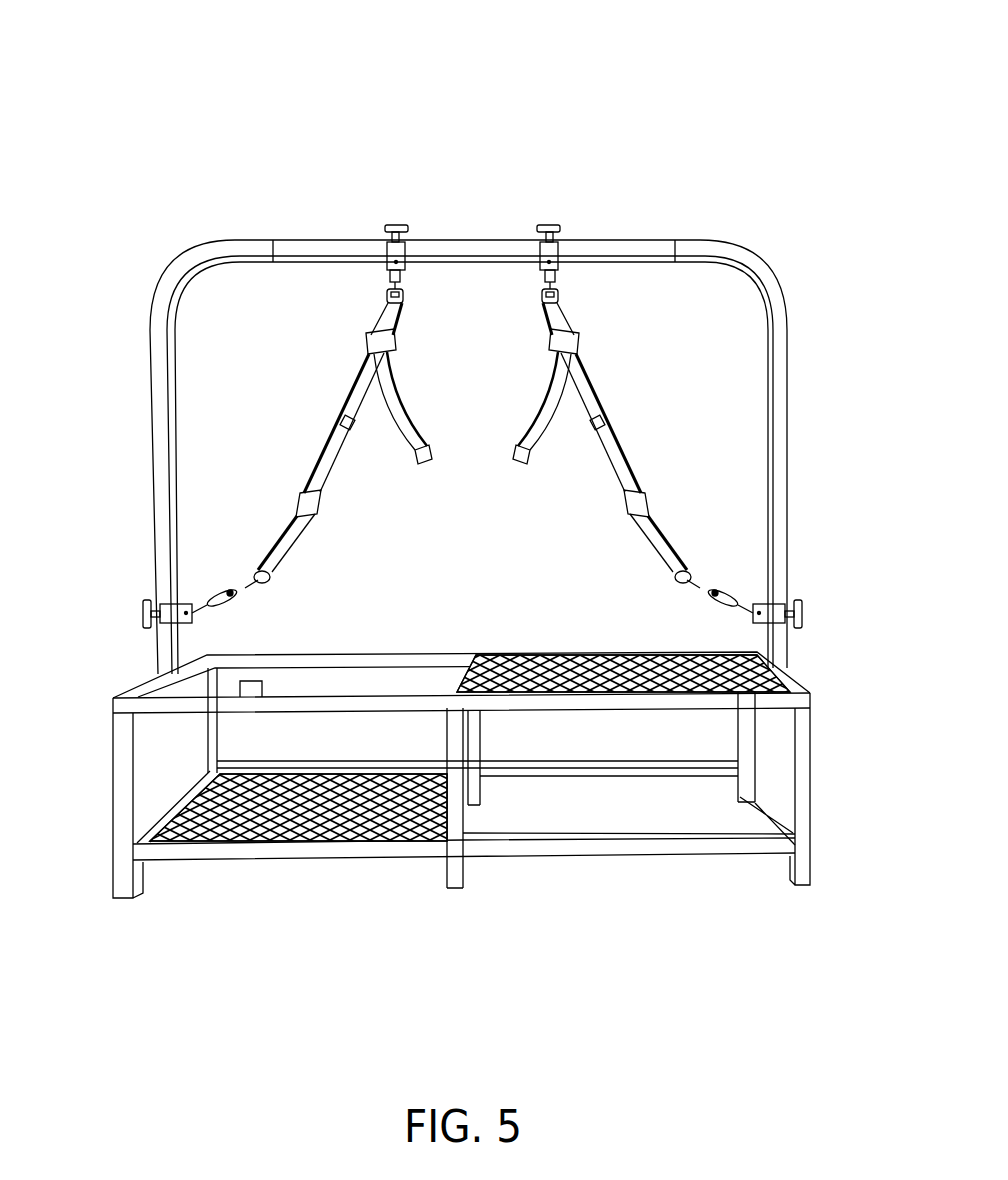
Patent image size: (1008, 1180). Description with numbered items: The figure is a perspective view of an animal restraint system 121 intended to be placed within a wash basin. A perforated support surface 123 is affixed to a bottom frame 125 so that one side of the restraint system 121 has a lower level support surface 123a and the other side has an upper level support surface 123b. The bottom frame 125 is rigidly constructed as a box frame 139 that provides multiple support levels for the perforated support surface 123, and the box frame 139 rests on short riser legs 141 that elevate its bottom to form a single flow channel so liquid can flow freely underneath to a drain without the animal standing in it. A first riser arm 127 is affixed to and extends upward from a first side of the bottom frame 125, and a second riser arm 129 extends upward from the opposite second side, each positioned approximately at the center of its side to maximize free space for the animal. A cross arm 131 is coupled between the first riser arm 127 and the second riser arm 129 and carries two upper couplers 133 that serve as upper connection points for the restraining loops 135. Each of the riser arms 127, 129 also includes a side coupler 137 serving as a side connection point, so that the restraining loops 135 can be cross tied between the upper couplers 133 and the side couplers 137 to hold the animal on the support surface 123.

The restraint system 121 is at (708, 140).
The perforated support surface 123 is at (470, 776).
The lower level support surface 123a is at (253, 818).
The upper level support surface 123b is at (578, 658).
The bottom frame 125 is at (538, 850).
The first riser arm 127 is at (152, 440).
The second riser arm 129 is at (787, 413).
The cross arm 131 is at (466, 240).
The upper couplers 133 is at (380, 240).
The restraining loops 135 is at (607, 440).
The side couplers 137 is at (145, 612).
The box frame 139 is at (805, 745).
The riser legs 141 is at (805, 878).